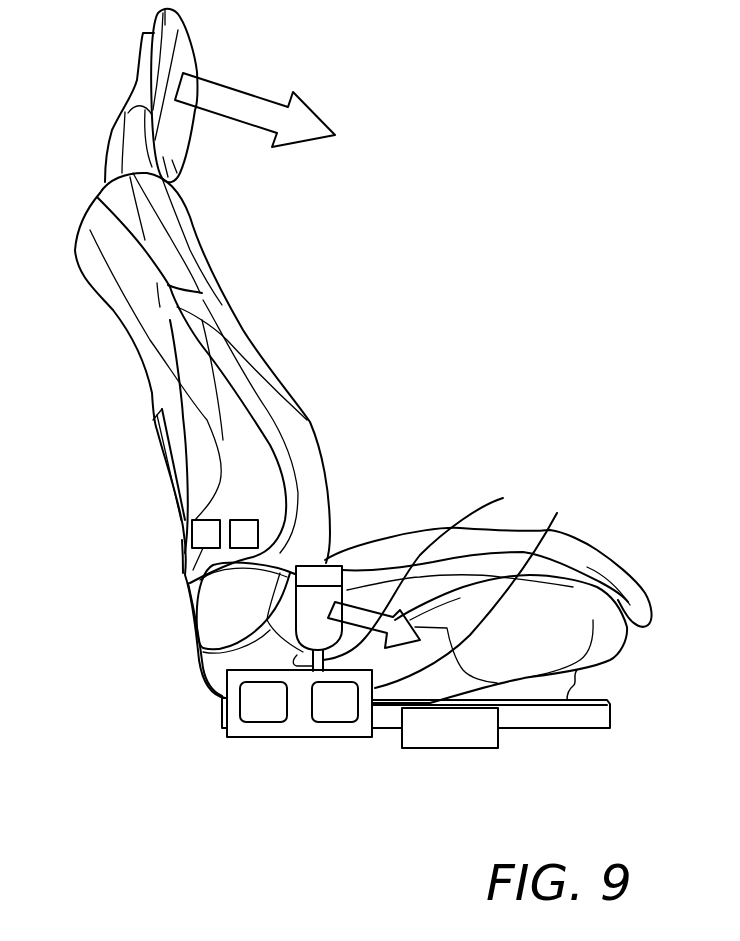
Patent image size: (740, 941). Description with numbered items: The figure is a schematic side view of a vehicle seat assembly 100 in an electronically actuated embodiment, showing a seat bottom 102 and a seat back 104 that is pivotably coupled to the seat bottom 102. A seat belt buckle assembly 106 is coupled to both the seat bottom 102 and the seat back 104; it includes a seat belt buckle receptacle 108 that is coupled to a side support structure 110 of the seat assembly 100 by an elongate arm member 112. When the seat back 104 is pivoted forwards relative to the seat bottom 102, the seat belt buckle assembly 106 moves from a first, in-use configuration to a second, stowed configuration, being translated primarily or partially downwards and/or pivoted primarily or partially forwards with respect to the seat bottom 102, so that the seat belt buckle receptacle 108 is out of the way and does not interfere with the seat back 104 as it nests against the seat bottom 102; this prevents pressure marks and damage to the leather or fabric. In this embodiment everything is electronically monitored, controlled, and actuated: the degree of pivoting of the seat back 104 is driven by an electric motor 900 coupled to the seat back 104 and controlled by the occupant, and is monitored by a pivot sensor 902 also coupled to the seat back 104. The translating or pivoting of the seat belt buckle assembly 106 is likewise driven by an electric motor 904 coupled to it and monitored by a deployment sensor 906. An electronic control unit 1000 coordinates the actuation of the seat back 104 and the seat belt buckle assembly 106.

The seat assembly 100 is at (482, 303).
The seat bottom 102 is at (193, 640).
The seat back 104 is at (148, 376).
The seat belt buckle assembly 106 is at (345, 553).
The seat belt buckle receptacle 108 is at (323, 565).
The side support structure 110 is at (497, 592).
The elongate arm member 112 is at (439, 570).
The electric motor 900 is at (241, 520).
The pivot sensor 902 is at (190, 534).
The electric motor 904 is at (347, 721).
The deployment sensor 906 is at (265, 721).
The electronic control unit 1000 is at (468, 737).